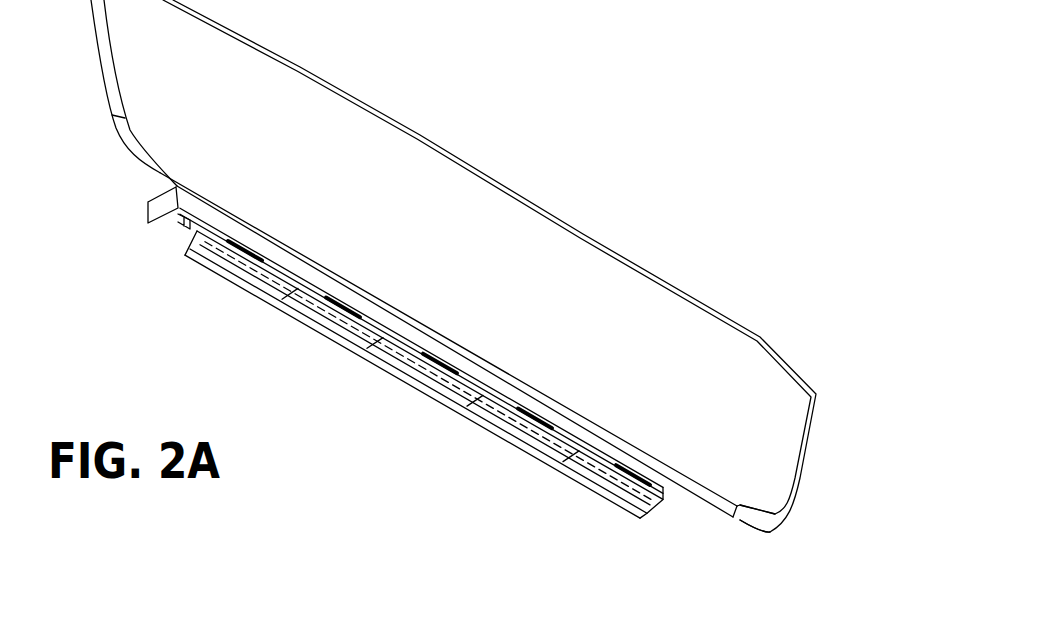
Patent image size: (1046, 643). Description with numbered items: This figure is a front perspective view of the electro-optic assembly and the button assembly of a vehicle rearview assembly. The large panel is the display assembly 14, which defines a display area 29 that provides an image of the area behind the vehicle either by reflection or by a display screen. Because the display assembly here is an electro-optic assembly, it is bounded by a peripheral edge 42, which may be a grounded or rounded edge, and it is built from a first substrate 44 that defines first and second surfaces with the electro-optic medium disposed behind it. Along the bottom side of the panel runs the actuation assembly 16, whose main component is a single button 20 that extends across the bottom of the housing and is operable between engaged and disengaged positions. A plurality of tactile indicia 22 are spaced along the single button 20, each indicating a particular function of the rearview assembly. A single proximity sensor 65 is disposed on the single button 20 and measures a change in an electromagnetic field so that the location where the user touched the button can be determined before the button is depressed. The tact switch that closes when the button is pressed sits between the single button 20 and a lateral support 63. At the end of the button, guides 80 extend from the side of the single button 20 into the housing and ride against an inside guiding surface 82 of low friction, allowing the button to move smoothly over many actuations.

The display assembly 14 is at (822, 372).
The actuation assembly 16 is at (184, 245).
The single button 20 is at (410, 343).
The tactile indicia 22 is at (248, 262).
The display area 29 is at (557, 254).
The peripheral edge 42 is at (757, 530).
The first substrate 44 is at (710, 505).
The lateral support 63 is at (646, 512).
The single proximity sensor 65 is at (227, 268).
The guides 80 is at (148, 202).
The inside guiding surface 82 is at (170, 233).